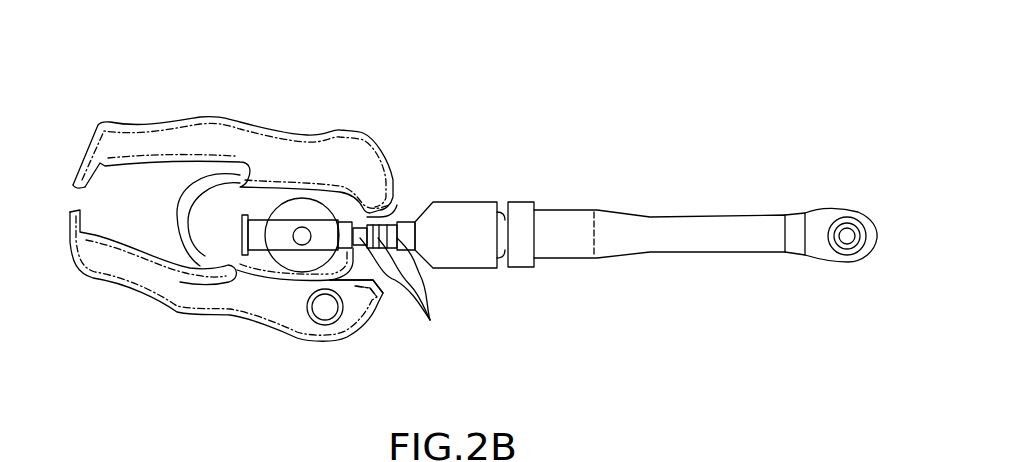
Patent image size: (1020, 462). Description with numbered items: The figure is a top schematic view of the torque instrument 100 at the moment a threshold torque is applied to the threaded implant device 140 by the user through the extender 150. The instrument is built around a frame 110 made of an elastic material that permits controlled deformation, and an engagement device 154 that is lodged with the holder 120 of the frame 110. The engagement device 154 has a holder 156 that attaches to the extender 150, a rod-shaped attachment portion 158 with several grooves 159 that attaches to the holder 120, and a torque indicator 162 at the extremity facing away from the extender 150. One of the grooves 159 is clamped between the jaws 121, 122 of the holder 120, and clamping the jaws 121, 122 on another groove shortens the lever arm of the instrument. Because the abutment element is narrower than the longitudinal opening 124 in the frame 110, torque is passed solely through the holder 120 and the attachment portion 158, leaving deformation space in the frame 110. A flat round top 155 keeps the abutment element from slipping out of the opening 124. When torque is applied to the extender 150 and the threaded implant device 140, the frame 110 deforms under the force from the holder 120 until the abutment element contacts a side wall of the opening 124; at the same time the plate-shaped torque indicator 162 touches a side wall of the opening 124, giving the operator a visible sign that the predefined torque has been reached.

The torque instrument 100 is at (387, 128).
The frame 110 is at (93, 287).
The longitudinal opening 124 is at (226, 205).
The engagement device 154 is at (273, 278).
The torque indicator 162 is at (237, 237).
The flat round top 155 is at (330, 202).
The holder 120 is at (400, 192).
The jaw 121 is at (353, 222).
The jaw 122 is at (393, 290).
The attachment portion 158 is at (410, 217).
The grooves 159 is at (419, 295).
The holder 156 is at (477, 257).
The extender 150 is at (665, 207).
The threaded implant device 140 is at (845, 230).